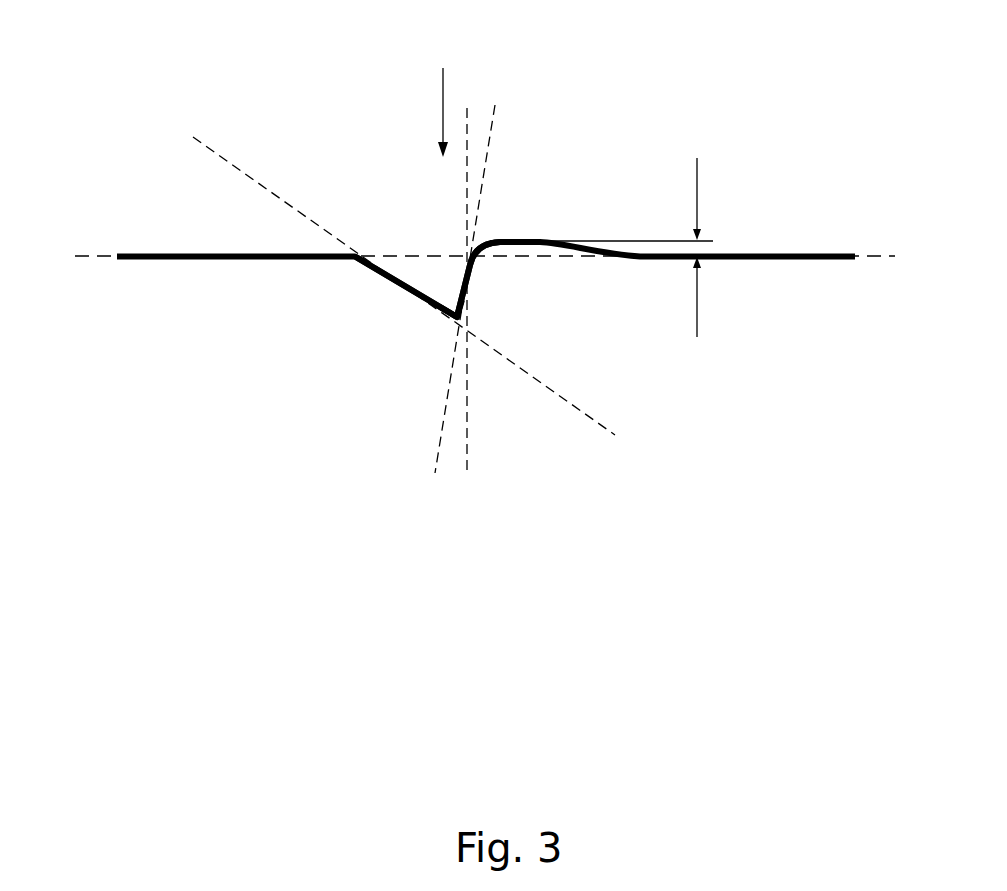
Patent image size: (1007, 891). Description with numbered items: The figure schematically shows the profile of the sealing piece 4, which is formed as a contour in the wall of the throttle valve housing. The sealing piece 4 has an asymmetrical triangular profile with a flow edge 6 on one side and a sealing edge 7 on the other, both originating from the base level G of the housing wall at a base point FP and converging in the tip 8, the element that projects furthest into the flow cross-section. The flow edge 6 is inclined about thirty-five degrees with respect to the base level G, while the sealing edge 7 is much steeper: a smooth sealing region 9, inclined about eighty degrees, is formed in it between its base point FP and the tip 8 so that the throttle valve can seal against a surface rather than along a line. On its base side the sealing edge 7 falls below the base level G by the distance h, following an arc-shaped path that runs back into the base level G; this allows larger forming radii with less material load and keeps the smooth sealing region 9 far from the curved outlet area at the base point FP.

The sealing piece 4 is at (443, 95).
The flow edge 6 is at (402, 285).
The sealing edge 7 is at (577, 323).
The smooth sealing region 9 is at (468, 283).
The tip 8 is at (463, 327).
The base level G is at (92, 256).
The base point FP is at (357, 259).
The distance h is at (610, 247).